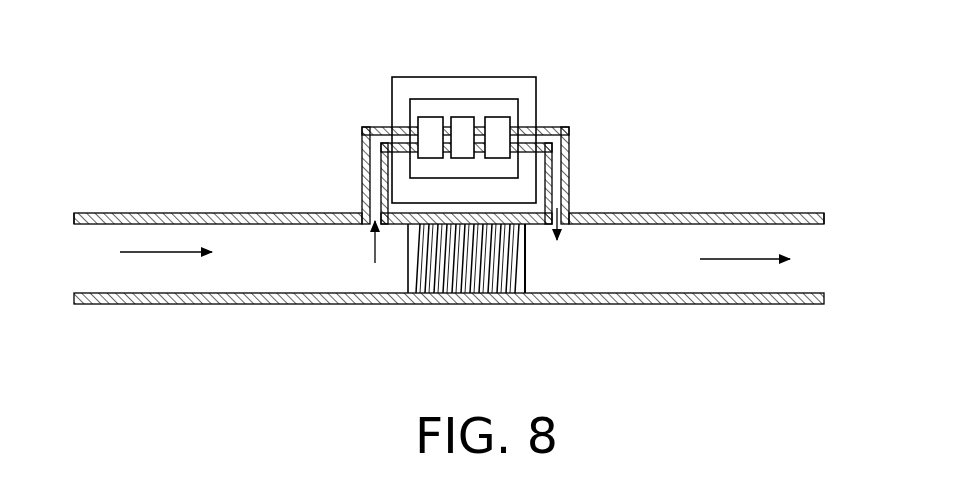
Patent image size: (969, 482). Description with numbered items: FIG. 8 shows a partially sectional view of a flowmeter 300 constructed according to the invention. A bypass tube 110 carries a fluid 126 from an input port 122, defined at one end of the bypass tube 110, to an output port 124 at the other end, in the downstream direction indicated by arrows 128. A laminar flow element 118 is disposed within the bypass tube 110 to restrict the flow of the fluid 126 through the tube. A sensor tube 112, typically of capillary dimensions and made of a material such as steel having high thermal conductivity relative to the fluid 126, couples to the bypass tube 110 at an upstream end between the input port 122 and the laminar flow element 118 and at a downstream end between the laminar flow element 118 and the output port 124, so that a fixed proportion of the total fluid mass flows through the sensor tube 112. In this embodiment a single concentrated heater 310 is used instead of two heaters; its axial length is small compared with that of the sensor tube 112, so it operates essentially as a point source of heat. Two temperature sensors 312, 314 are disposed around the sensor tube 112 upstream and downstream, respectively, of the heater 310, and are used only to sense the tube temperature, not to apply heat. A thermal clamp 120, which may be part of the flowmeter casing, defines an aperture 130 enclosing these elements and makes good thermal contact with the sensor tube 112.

The bypass tube 110 is at (652, 305).
The sensor tube 112 is at (570, 142).
The laminar flow element 118 is at (527, 281).
The thermal clamp 120 is at (538, 94).
The input port 122 is at (75, 258).
The output port 124 is at (823, 265).
The fluid 126 is at (270, 276).
The arrows 128 is at (167, 253).
The aperture 130 is at (432, 102).
The flowmeter 300 is at (323, 357).
The concentrated heater 310 is at (458, 118).
The temperature sensor 312 is at (428, 118).
The temperature sensor 314 is at (498, 118).